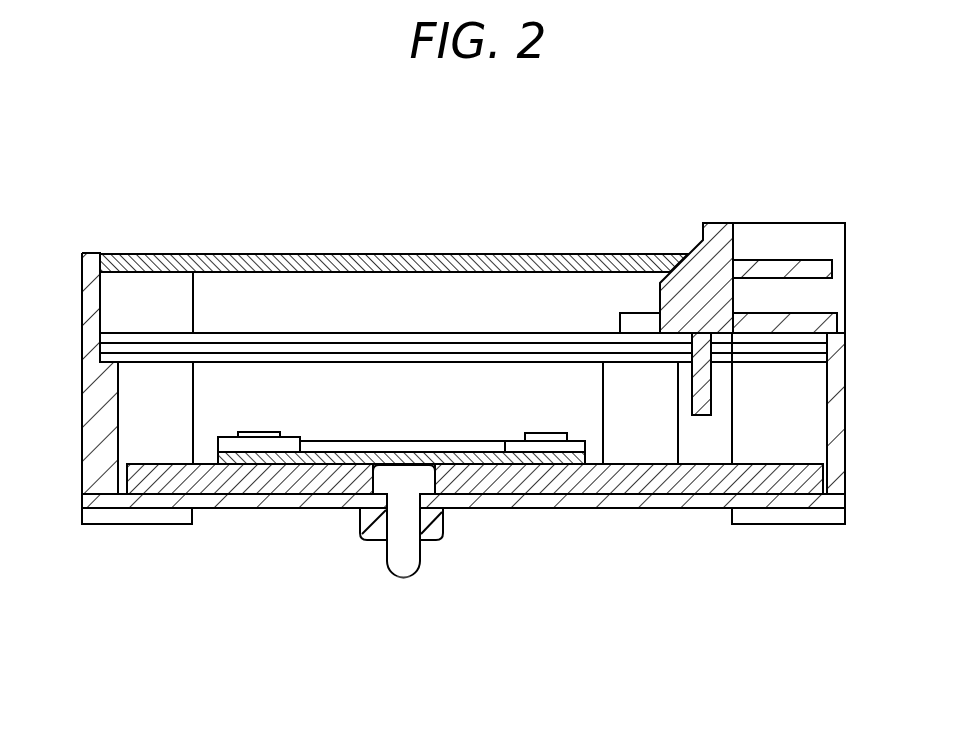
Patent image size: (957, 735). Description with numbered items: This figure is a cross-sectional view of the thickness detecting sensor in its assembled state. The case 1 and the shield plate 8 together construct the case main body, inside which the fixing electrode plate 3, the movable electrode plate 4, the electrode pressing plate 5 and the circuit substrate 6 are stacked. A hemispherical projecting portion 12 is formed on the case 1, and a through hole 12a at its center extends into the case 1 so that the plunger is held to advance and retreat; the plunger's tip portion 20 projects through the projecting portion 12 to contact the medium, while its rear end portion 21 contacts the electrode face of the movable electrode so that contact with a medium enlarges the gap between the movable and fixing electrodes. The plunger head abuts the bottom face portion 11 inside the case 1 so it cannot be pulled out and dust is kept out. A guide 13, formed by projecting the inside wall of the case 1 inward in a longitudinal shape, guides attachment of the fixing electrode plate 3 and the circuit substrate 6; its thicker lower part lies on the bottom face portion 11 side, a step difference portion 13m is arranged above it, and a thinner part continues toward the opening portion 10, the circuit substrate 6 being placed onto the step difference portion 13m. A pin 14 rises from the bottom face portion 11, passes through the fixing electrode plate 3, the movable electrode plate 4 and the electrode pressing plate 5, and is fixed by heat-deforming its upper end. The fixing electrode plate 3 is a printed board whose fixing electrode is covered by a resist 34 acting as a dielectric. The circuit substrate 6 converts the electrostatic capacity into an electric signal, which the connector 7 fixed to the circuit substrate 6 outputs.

The case 1 is at (80, 377).
The fixing electrode plate 3 is at (630, 496).
The movable electrode plate 4 is at (542, 464).
The electrode pressing plate 5 is at (340, 438).
The circuit substrate 6 is at (220, 333).
The connector 7 is at (713, 223).
The shield plate 8 is at (484, 254).
The opening portion 10 is at (87, 253).
The bottom face portion 11 is at (703, 508).
The projecting portion 12 is at (360, 524).
The through hole 12a is at (440, 540).
The guide 13 is at (680, 438).
The step difference portion 13m is at (633, 368).
The pin 14 is at (265, 432).
The tip portion 20 is at (403, 578).
The rear end portion 21 is at (407, 464).
The resist 34 is at (258, 496).